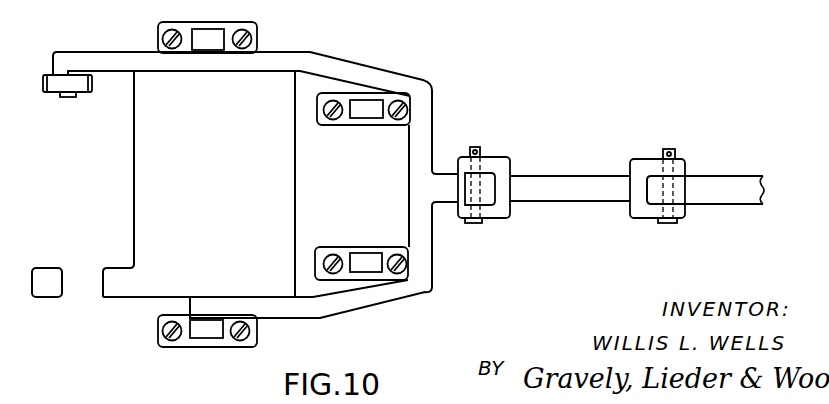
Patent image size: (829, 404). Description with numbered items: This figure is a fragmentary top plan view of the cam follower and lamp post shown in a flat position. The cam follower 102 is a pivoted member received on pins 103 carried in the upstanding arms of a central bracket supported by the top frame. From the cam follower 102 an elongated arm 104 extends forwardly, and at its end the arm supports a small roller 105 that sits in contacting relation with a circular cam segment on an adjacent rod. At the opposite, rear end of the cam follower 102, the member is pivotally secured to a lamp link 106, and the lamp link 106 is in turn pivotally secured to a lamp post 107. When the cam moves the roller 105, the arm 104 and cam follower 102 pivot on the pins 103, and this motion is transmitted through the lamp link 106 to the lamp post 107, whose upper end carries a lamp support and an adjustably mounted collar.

The cam follower 102 is at (350, 68).
The pins 103 is at (205, 342).
The elongated arm 104 is at (94, 60).
The small roller 105 is at (56, 96).
The lamp link 106 is at (565, 185).
The lamp post 107 is at (725, 185).